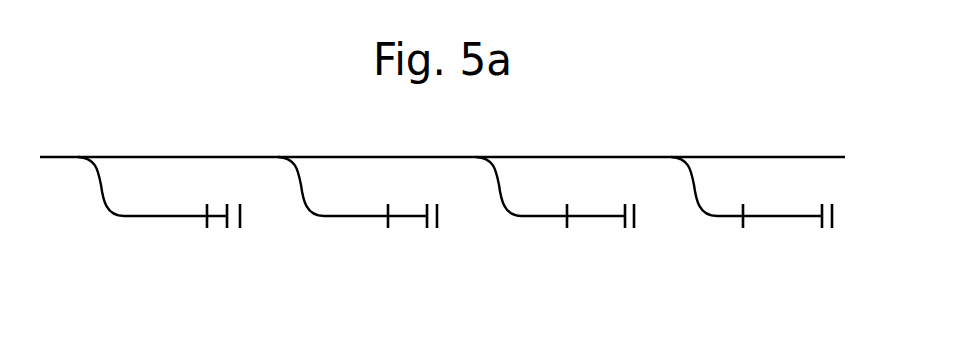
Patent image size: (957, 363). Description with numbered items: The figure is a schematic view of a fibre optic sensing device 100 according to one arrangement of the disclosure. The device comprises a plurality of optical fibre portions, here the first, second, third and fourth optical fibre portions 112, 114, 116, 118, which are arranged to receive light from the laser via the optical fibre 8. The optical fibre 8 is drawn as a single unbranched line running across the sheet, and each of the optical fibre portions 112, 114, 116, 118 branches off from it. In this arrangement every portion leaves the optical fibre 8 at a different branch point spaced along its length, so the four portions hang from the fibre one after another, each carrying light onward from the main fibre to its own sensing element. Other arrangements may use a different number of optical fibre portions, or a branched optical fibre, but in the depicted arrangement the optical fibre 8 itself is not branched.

The fibre optic sensing device 100 is at (708, 127).
The optical fibre 8 is at (588, 155).
The first optical fibre portion 112 is at (150, 217).
The second optical fibre portion 114 is at (352, 217).
The third optical fibre portion 116 is at (532, 217).
The fourth optical fibre portion 118 is at (727, 217).